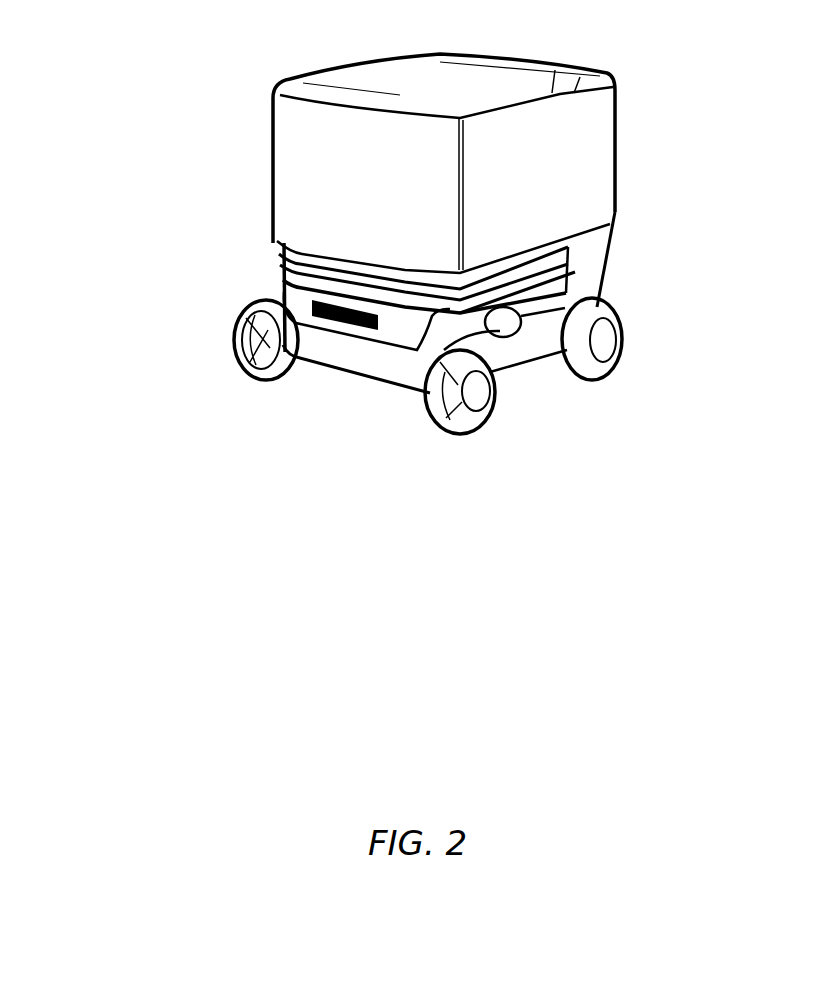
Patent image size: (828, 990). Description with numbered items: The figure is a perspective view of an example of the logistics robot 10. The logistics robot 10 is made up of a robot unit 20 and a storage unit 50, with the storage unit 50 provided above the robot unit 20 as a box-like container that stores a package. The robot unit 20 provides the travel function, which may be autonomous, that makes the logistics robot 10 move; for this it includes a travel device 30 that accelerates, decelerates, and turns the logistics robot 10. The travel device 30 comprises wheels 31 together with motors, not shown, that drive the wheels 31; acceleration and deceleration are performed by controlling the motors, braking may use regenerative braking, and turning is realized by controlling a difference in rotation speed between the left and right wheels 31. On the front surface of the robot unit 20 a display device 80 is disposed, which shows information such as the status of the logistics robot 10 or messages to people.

The logistics robot 10 is at (422, 562).
The robot unit 20 is at (201, 330).
The travel device 30 is at (370, 390).
The wheels 31 is at (270, 382).
The storage unit 50 is at (300, 141).
The display device 80 is at (282, 292).